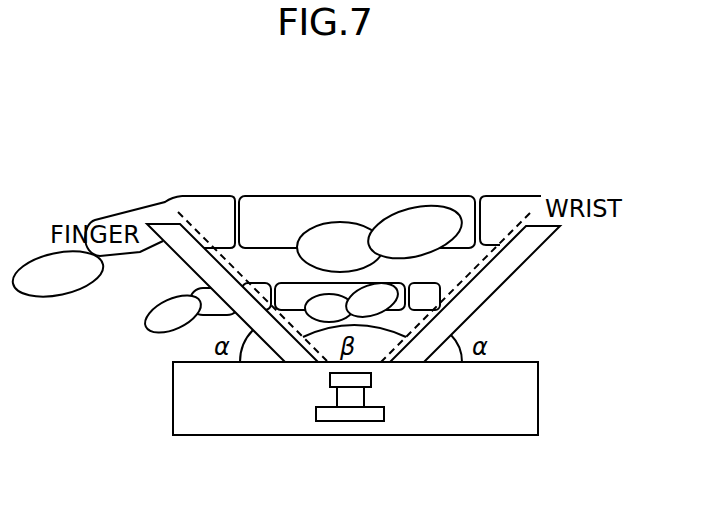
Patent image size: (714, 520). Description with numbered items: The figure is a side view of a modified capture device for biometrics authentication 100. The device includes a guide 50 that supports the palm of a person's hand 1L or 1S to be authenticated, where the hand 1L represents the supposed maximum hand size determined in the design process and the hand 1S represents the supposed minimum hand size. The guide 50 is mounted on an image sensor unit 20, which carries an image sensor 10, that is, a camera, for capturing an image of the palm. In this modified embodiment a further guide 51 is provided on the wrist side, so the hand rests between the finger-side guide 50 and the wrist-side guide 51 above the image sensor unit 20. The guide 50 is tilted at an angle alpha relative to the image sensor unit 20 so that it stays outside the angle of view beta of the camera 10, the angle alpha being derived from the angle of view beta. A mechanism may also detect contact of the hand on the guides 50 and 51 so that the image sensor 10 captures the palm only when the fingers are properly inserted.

The person's hand (maximum size) 1L is at (335, 193).
The person's hand (minimum size) 1S is at (282, 275).
The image sensor 10 is at (348, 421).
The image sensor unit 20 is at (538, 407).
The guide 50 is at (178, 256).
The guide on the wrist side 51 is at (527, 258).
The capture device for biometrics authentication 100 is at (371, 357).